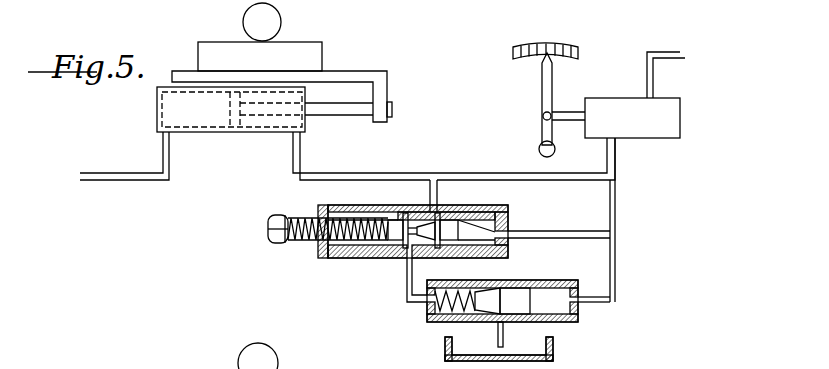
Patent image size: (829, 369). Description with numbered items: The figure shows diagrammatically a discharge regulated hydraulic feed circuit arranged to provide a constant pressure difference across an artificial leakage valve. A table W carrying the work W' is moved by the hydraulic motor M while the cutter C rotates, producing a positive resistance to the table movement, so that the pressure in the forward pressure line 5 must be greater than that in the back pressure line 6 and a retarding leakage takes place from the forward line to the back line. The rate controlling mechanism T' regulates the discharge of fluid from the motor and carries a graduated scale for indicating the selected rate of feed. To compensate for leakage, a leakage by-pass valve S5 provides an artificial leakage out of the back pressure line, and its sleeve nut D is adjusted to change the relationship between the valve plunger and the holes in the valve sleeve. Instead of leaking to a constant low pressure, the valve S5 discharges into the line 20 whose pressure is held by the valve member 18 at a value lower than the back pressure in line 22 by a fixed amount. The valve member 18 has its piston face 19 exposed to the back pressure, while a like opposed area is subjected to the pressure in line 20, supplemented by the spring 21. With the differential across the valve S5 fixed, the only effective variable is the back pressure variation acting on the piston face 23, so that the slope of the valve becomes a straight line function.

The cutter C is at (243, 18).
The work W' is at (260, 44).
The table W is at (282, 86).
The motor M is at (222, 132).
The forward pressure line 5 is at (108, 182).
The back pressure line 6 is at (362, 173).
The rate controlling mechanism T' is at (599, 83).
The leakage by-pass valve S5 is at (477, 205).
The sleeve nut D is at (316, 254).
The piston face 23 is at (496, 225).
The back pressure line 22 is at (616, 263).
The line 20 is at (405, 274).
The valve member 18 is at (523, 280).
The spring 21 is at (427, 321).
The piston face 19 is at (532, 303).